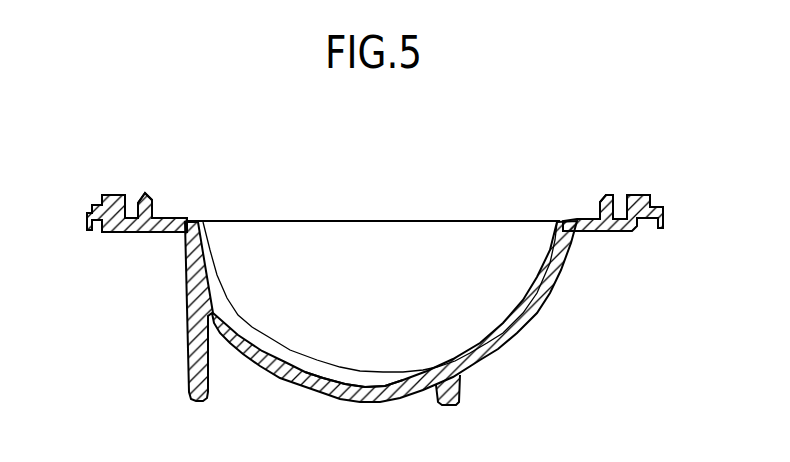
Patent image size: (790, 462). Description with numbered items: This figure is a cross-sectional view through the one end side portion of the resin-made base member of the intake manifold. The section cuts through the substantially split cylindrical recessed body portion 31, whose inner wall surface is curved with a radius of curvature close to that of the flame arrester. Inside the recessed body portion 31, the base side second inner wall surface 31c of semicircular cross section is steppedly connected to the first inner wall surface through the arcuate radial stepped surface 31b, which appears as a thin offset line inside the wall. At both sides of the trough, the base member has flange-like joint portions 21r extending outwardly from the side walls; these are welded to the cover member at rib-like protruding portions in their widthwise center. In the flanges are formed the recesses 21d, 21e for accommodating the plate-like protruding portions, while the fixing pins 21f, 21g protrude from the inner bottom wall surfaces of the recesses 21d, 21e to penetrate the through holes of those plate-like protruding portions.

The recess 21d is at (621, 207).
The recess 21e is at (167, 218).
The fixing pin 21f is at (607, 193).
The fixing pin 21g is at (143, 192).
The flange-like joint portion 21r is at (88, 217).
The recessed body portion 31 is at (325, 398).
The arcuate radial stepped surface 31b is at (216, 279).
The base side second inner wall surface 31c is at (337, 370).